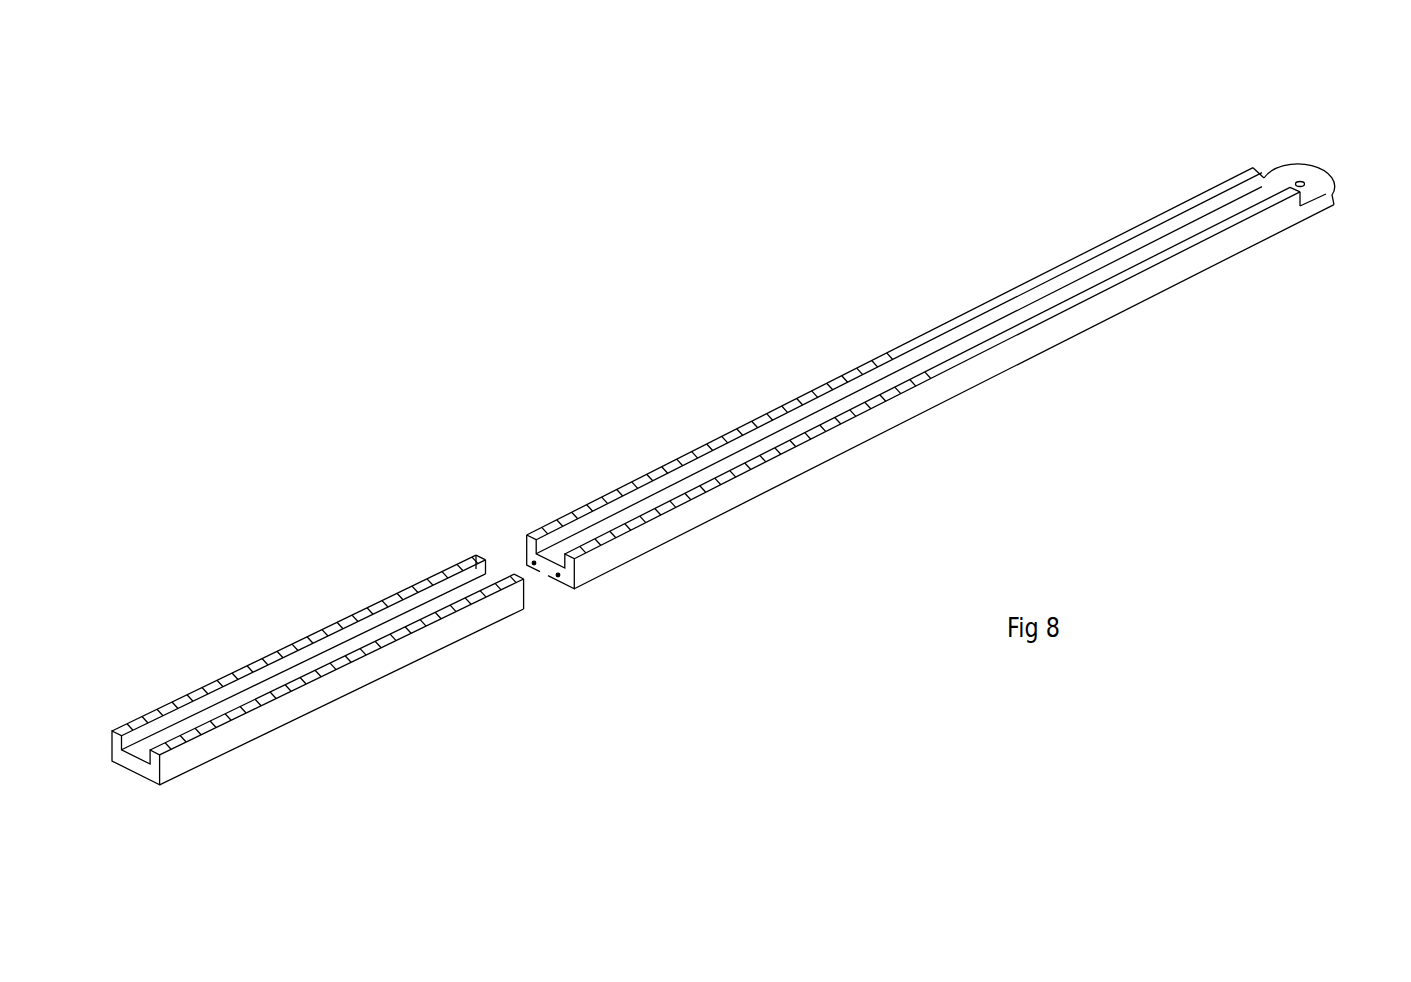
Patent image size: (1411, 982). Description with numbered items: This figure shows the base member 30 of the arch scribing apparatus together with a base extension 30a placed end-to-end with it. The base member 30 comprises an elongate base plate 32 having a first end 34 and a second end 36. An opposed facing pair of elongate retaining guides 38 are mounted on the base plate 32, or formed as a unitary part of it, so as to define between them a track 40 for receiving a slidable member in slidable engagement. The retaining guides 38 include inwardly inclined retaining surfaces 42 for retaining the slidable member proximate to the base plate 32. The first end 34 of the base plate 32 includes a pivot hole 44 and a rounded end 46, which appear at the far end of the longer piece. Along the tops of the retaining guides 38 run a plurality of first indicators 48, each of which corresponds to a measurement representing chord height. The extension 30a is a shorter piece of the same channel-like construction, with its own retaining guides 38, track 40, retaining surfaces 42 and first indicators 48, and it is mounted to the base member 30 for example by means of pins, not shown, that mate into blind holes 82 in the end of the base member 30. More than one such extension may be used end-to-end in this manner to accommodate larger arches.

The base member 30 is at (1109, 155).
The extension 30a is at (368, 706).
The base plate 32 is at (131, 767).
The first end 34 is at (1316, 240).
The second end 36 is at (173, 804).
The retaining guides 38 is at (114, 730).
The track 40 is at (465, 565).
The retaining surfaces 42 is at (192, 707).
The pivot hole 44 is at (1300, 183).
The rounded end 46 is at (1333, 203).
The first indicators 48 is at (297, 644).
The blind holes 82 is at (558, 600).